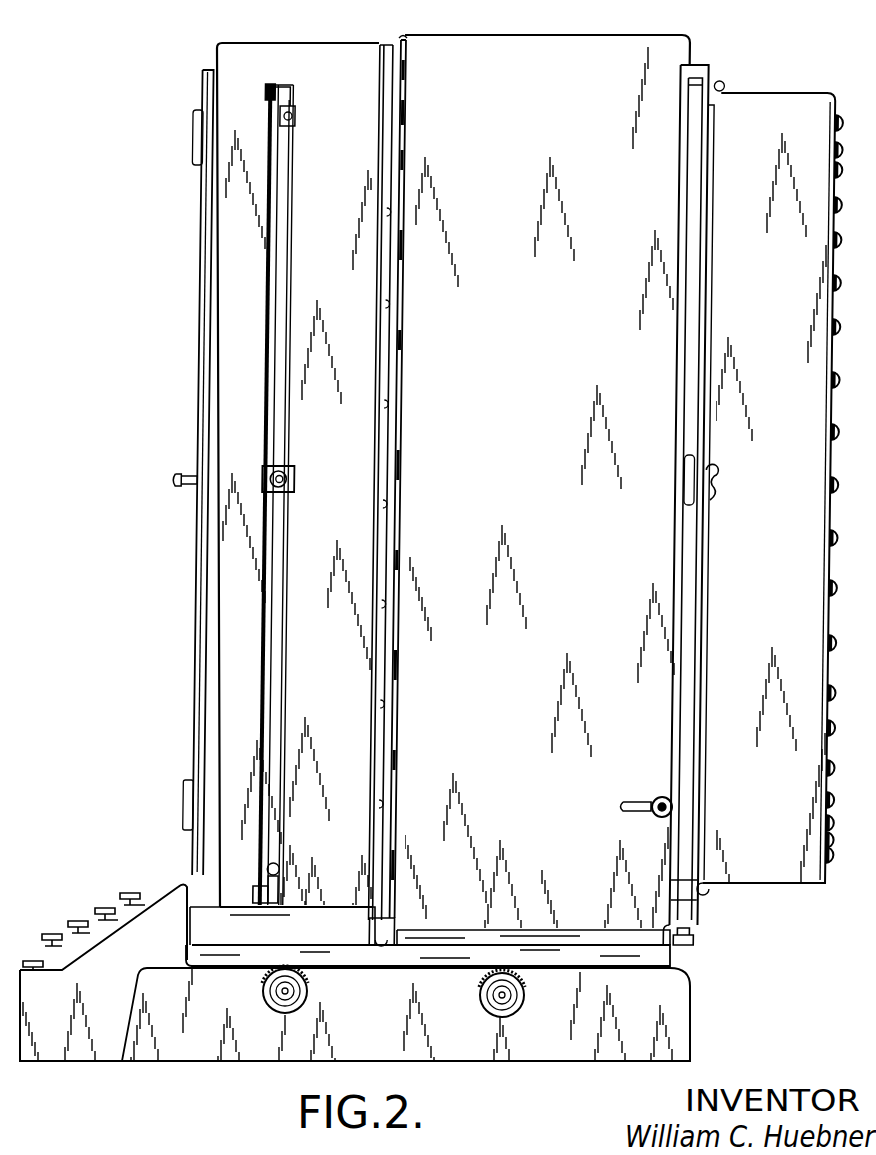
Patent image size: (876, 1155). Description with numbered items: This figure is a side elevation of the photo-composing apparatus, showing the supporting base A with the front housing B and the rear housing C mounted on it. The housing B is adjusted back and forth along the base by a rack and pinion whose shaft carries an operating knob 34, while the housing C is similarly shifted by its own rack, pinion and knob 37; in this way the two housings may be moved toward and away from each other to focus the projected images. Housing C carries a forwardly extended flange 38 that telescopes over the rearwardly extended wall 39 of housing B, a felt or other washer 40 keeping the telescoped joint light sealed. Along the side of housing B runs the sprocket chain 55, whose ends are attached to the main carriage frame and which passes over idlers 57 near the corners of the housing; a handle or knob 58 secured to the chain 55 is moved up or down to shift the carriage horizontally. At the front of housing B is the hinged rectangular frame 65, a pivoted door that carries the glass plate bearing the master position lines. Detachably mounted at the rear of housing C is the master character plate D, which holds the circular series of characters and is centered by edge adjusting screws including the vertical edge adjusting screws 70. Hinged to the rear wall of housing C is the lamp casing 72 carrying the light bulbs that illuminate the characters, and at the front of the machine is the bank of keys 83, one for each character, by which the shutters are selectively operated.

The supporting base A is at (180, 1052).
The front housing B is at (258, 935).
The rear housing C is at (371, 482).
The master character plate D is at (700, 751).
The operating knob 34 is at (290, 1009).
The knob 37 is at (520, 1007).
The forwardly extended flange 38 is at (438, 29).
The rearwardly extended wall 39 is at (390, 44).
The washer 40 is at (398, 38).
The sprocket chain 55 is at (264, 623).
The idlers 57 is at (278, 88).
The handle or knob 58 is at (288, 478).
The hinged rectangular frame 65 is at (199, 296).
The vertical edge adjusting screws 70 is at (693, 941).
The lamp casing 72 is at (757, 877).
The keys 83 is at (122, 892).